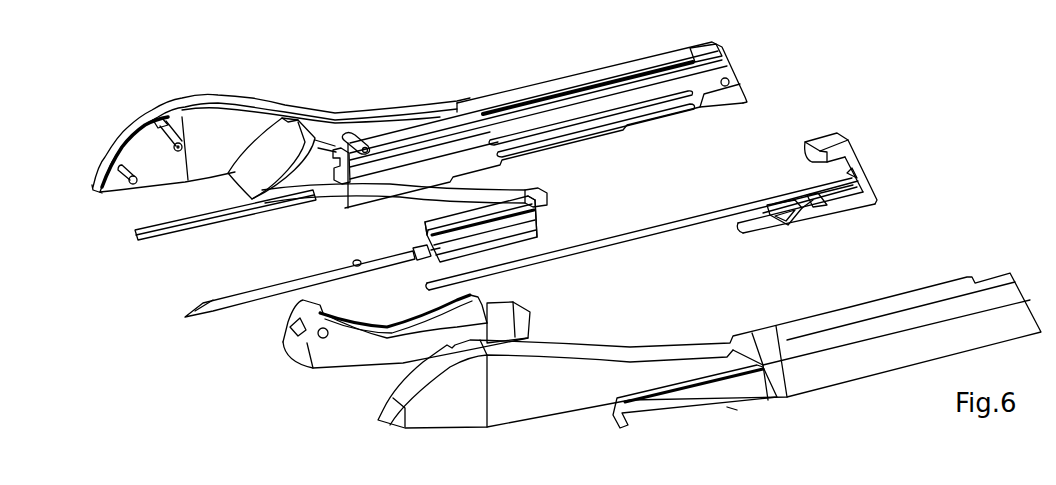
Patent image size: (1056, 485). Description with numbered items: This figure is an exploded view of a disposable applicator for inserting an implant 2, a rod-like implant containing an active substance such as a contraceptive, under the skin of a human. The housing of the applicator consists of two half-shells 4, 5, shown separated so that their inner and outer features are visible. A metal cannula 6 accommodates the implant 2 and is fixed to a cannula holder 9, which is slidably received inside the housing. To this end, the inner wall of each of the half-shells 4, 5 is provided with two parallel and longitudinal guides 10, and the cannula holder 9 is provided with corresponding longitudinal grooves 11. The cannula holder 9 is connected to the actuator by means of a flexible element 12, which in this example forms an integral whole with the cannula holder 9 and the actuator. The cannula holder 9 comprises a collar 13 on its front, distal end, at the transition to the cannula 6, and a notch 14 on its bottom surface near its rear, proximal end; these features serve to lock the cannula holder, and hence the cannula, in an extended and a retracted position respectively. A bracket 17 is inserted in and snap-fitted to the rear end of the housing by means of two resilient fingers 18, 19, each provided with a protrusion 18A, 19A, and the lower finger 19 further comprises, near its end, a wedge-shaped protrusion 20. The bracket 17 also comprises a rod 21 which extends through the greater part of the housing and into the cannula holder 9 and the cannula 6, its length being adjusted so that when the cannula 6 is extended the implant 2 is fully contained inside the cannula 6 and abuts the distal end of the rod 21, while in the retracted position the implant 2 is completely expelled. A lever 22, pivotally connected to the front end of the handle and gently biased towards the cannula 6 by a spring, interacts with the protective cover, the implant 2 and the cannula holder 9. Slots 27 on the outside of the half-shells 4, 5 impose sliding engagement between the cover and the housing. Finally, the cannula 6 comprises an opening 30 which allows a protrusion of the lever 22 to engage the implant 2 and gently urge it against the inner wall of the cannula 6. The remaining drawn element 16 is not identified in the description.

The implant 2 is at (135, 235).
The half-shell 4 is at (503, 97).
The half-shell 5 is at (808, 382).
The metal cannula 6 is at (233, 298).
The cannula holder 9 is at (510, 238).
The longitudinal guides 10 is at (640, 97).
The longitudinal grooves 11 is at (515, 235).
The flexible element 12 is at (342, 185).
The collar 13 is at (413, 250).
The notch 14 is at (513, 243).
The curved jaw 16 is at (370, 123).
The bracket 17 is at (863, 170).
The resilient finger 18 is at (843, 137).
The protrusion 18A is at (825, 155).
The lower resilient finger 19 is at (855, 208).
The protrusion 19A is at (828, 212).
The wedge-shaped protrusion 20 is at (783, 225).
The rod 21 is at (710, 213).
The lever 22 is at (330, 358).
The slots 27 is at (647, 400).
The opening 30 is at (354, 262).